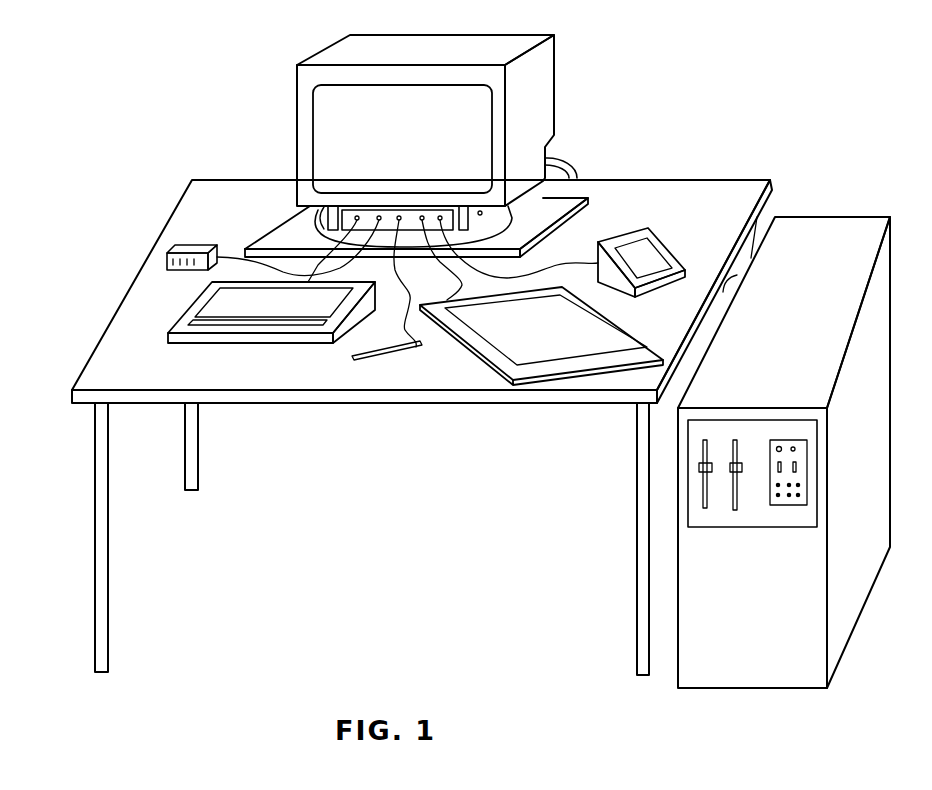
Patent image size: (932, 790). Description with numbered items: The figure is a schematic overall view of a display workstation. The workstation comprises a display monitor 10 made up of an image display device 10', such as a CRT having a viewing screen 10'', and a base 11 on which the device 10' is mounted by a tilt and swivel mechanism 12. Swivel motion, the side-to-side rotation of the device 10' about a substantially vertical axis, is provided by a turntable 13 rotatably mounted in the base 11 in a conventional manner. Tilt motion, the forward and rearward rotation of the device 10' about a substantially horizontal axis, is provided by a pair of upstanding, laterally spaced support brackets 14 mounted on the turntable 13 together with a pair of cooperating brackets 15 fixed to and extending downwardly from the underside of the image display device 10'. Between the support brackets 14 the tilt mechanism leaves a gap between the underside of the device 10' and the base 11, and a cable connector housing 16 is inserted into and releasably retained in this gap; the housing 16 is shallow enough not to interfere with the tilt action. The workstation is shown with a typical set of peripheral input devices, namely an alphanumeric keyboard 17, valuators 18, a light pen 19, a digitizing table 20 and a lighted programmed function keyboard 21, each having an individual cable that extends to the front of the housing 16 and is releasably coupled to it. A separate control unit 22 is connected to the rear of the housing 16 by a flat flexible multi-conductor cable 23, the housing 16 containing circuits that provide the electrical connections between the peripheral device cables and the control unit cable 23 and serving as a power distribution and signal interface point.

The display monitor 10 is at (382, 120).
The image display device 10' is at (564, 120).
The viewing screen 10'' is at (463, 139).
The base 11 is at (580, 213).
The tilt and swivel mechanism 12 is at (303, 218).
The turntable 13 is at (490, 220).
The support brackets 14 is at (320, 230).
The cooperating brackets 15 is at (337, 213).
The cable connector housing 16 is at (390, 217).
The alphanumeric keyboard 17 is at (202, 297).
The valuators 18 is at (198, 245).
The light pen 19 is at (412, 348).
The digitizing table 20 is at (630, 337).
The lighted programmed function keyboard 21 is at (665, 242).
The control unit 22 is at (853, 225).
The multi-conductor cable 23 is at (573, 175).